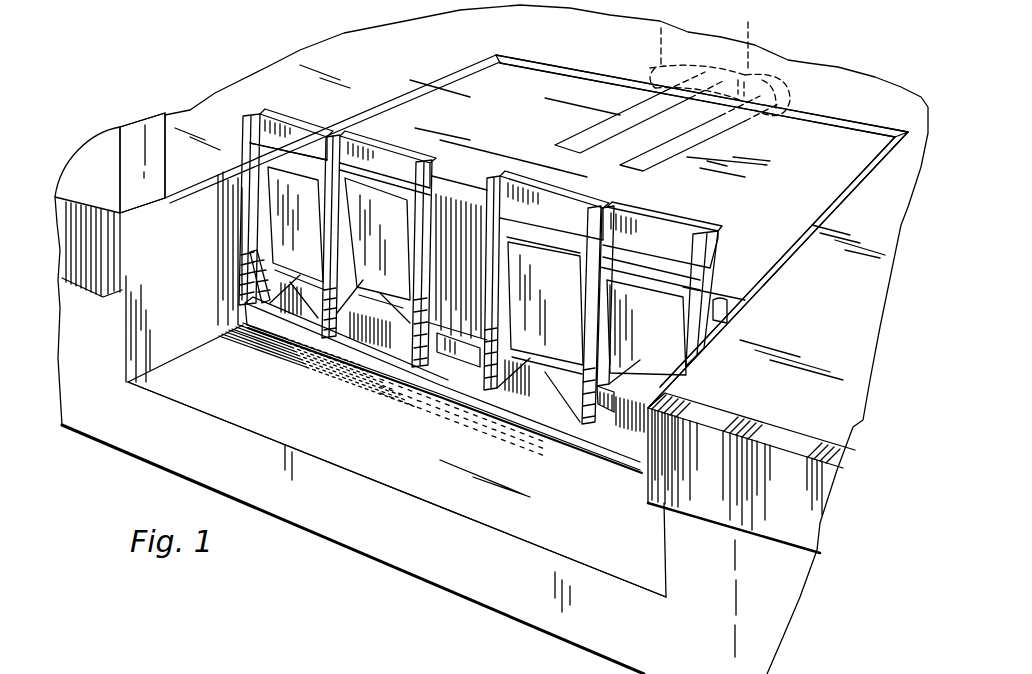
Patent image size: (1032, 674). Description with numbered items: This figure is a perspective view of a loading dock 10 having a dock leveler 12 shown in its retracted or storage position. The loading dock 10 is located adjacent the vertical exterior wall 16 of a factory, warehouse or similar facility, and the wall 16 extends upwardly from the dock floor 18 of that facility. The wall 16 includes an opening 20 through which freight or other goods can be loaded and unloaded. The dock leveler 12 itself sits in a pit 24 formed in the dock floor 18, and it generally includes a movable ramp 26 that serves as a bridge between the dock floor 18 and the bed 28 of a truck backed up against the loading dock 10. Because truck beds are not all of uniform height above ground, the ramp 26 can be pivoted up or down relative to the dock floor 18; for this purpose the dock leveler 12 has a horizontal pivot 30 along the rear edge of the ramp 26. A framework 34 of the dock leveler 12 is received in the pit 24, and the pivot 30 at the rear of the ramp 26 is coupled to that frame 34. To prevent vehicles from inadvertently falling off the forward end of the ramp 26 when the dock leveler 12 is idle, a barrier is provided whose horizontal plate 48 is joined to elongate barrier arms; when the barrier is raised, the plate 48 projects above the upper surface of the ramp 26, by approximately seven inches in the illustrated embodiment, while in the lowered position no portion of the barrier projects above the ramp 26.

The loading dock 10 is at (278, 52).
The dock leveler 12 is at (425, 78).
The vertical exterior wall 16 is at (143, 124).
The dock floor 18 is at (198, 127).
The opening 20 is at (115, 158).
The pit 24 is at (496, 510).
The movable ramp 26 is at (852, 137).
The bed 28 is at (647, 533).
The horizontal pivot 30 is at (535, 68).
The framework 34 is at (545, 421).
The horizontal plate 48 is at (688, 230).